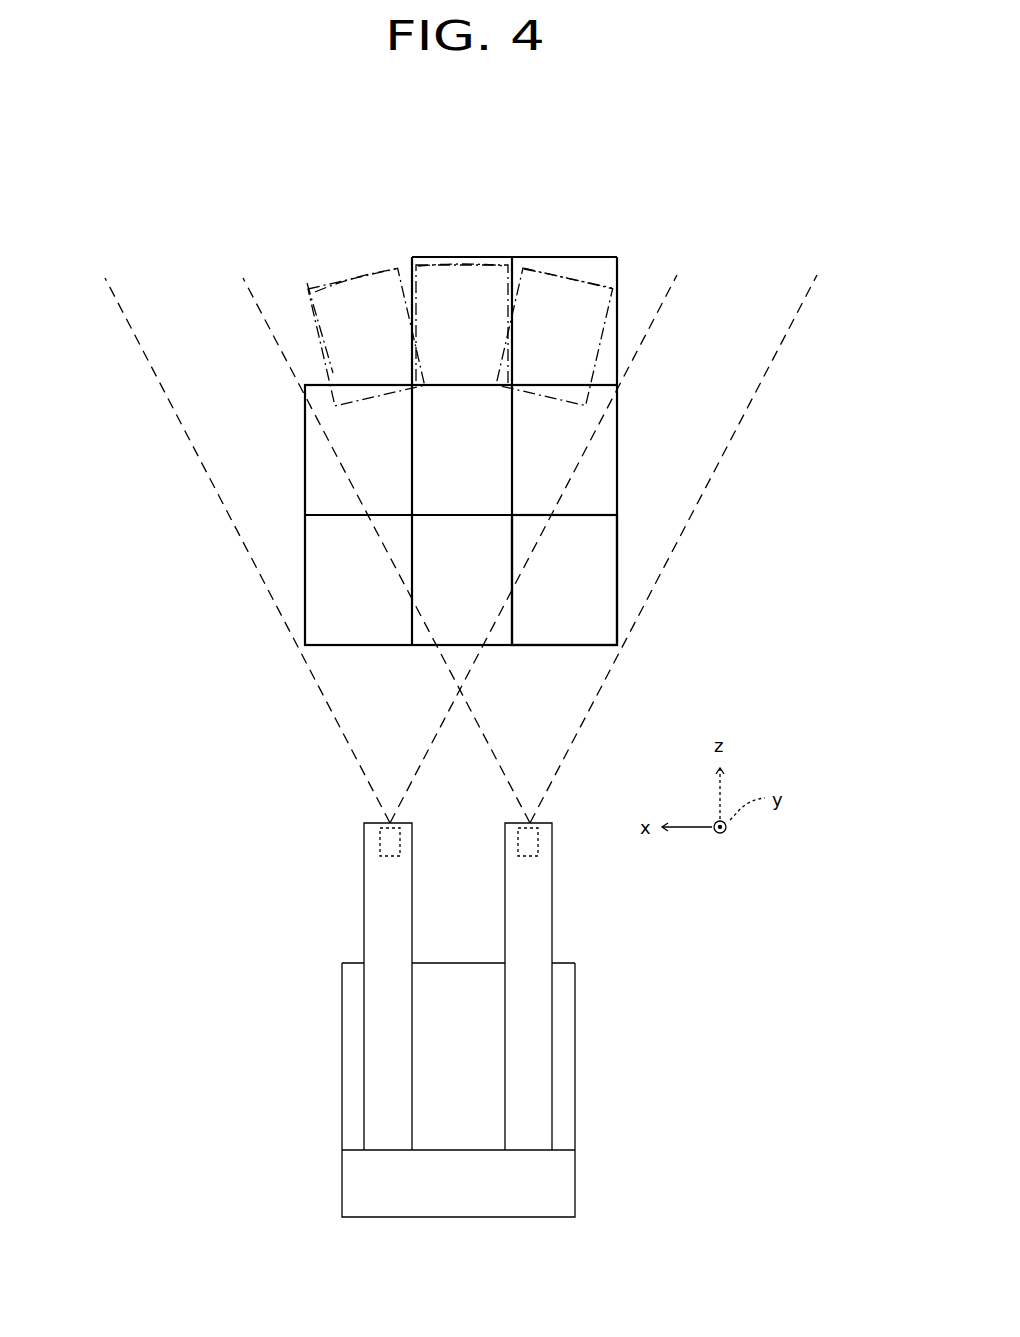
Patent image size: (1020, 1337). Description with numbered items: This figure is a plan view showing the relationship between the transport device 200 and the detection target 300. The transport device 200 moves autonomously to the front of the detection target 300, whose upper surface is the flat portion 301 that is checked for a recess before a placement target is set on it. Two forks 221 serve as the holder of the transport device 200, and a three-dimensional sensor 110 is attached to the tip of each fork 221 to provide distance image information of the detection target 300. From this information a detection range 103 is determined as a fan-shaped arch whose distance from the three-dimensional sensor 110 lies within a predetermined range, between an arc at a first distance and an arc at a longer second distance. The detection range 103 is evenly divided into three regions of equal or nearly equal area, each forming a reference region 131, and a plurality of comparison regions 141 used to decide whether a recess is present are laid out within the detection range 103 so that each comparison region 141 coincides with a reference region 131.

The detection range 103 is at (297, 372).
The three-dimensional sensor 110 is at (398, 856).
The reference region 131 is at (380, 300).
The comparison region 141 is at (332, 285).
The transport device 200 is at (342, 1058).
The fork 221 is at (365, 912).
The detection target 300 is at (303, 560).
The flat portion 301 is at (607, 527).